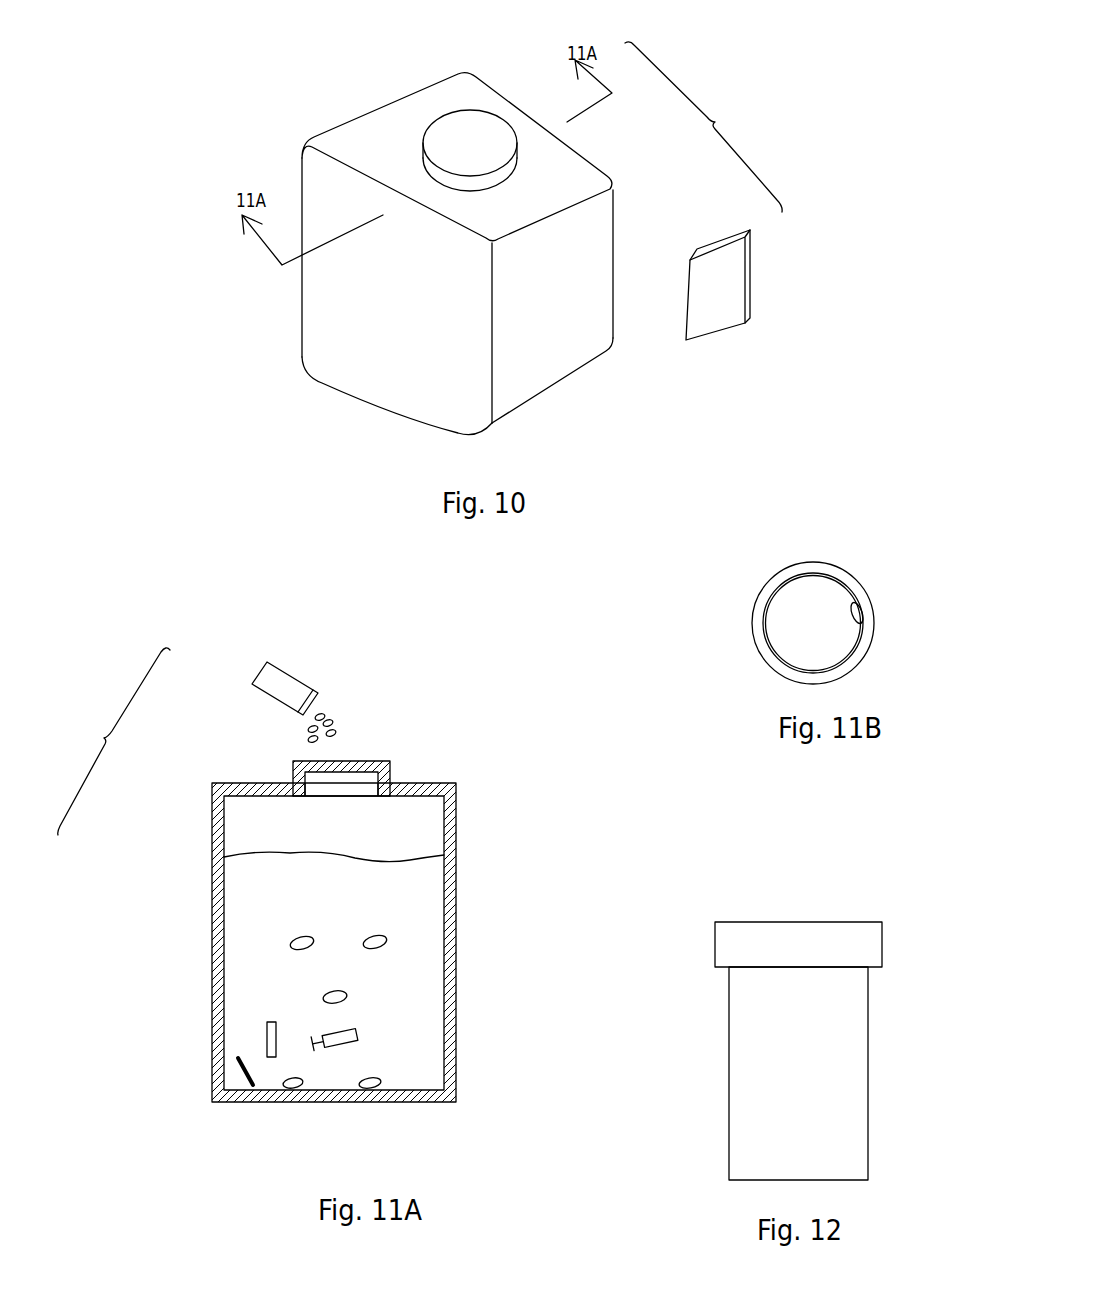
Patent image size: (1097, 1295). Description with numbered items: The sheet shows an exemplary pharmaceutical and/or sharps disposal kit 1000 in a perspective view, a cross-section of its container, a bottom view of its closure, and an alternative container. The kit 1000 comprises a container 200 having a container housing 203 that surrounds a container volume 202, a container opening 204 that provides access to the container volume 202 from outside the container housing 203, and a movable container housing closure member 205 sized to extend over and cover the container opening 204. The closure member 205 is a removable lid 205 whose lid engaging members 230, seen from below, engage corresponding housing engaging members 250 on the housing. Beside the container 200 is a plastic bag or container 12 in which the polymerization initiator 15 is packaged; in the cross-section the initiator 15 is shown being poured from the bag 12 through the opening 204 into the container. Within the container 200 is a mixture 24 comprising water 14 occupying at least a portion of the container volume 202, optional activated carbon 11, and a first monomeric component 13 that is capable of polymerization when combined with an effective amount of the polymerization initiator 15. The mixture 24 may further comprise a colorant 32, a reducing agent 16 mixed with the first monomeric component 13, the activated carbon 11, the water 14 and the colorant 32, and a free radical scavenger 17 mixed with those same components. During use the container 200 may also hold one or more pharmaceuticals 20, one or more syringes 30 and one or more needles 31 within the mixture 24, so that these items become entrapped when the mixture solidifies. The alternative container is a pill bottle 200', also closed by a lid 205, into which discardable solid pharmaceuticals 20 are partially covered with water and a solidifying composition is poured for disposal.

In FIG. 10, the container 200 is at (406, 254).
In FIG. 11A, the container 200 is at (361, 942).
In FIG. 12, the pill bottle 200' is at (853, 1073).
In FIG. 11A, the container volume 202 is at (240, 826).
In FIG. 10, the container housing 203 is at (330, 333).
In FIG. 11A, the container housing 203 is at (212, 897).
In FIG. 11A, the container opening 204 is at (365, 755).
In FIG. 10, the movable container housing closure member 205 is at (450, 135).
In FIG. 11B, the movable container housing closure member 205 is at (837, 565).
In FIG. 12, the movable container housing closure member 205 is at (882, 922).
In FIG. 11B, the lid engaging members 230 is at (858, 625).
In FIG. 11A, the housing engaging members 250 is at (390, 773).
In FIG. 10, the pharmaceutical disposal kit 1000 is at (703, 127).
In FIG. 11A, the pharmaceutical disposal kit 1000 is at (114, 741).
In FIG. 11A, the activated carbon 11 is at (260, 923).
In FIG. 10, the plastic bag or container 12 is at (727, 297).
In FIG. 11A, the plastic bag or container 12 is at (273, 682).
In FIG. 11A, the first monomeric component 13 is at (407, 897).
In FIG. 11A, the water 14 is at (412, 980).
In FIG. 11A, the polymerization initiator 15 is at (310, 727).
In FIG. 11A, the reducing agent 16 is at (423, 1023).
In FIG. 11A, the free radical scavenger 17 is at (427, 1052).
In FIG. 11A, the pharmaceutical 20 is at (363, 946).
In FIG. 11A, the mixture 24 is at (425, 930).
In FIG. 11A, the syringe 30 is at (276, 1030).
In FIG. 11A, the needle 31 is at (240, 1075).
In FIG. 11A, the colorant 32 is at (363, 890).